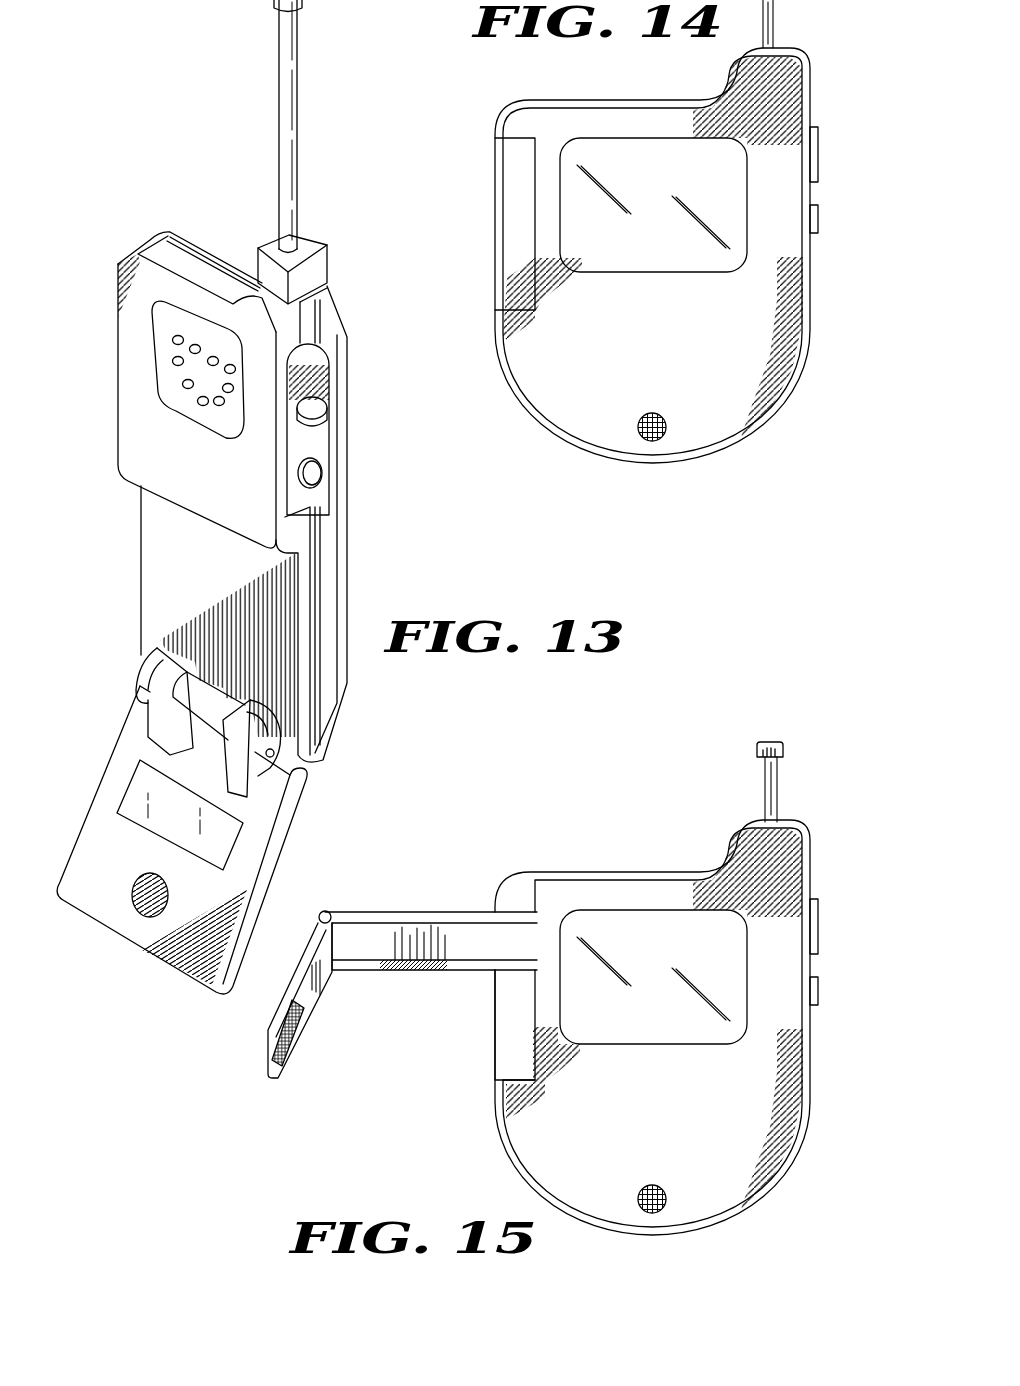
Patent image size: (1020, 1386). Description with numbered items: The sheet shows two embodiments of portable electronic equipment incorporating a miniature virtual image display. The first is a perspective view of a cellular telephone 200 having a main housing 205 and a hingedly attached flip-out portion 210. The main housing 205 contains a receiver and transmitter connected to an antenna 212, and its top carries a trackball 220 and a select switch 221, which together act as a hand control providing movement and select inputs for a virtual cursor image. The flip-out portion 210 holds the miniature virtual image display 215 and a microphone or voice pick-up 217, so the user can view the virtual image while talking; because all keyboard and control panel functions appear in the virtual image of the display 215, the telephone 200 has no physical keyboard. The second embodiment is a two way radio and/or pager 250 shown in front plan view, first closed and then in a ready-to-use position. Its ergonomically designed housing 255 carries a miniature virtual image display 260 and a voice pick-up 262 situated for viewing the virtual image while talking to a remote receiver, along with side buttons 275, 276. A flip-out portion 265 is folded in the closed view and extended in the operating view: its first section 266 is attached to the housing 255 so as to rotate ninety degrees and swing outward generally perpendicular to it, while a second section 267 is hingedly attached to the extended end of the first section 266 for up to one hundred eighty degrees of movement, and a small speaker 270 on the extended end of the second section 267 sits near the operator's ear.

In FIG. 13, the cellular telephone 200 is at (96, 153).
In FIG. 13, the main housing 205 is at (122, 378).
In FIG. 13, the flip-out portion 210 is at (117, 738).
In FIG. 13, the antenna 212 is at (298, 98).
In FIG. 13, the miniature virtual image display 215 is at (140, 792).
In FIG. 13, the voice pick-up 217 is at (132, 893).
In FIG. 13, the trackball 220 is at (325, 479).
In FIG. 13, the select switch 221 is at (327, 414).
In FIG. 14, the two way radio and/or pager 250 is at (583, 76).
In FIG. 15, the two way radio and/or pager 250 is at (450, 1198).
In FIG. 14, the housing 255 is at (678, 450).
In FIG. 15, the housing 255 is at (652, 1044).
In FIG. 14, the miniature virtual image display 260 is at (622, 272).
In FIG. 15, the miniature virtual image display 260 is at (653, 997).
In FIG. 14, the voice pick-up 262 is at (665, 422).
In FIG. 15, the voice pick-up 262 is at (675, 1179).
In FIG. 14, the flip-out portion 265 is at (512, 198).
In FIG. 15, the flip-out portion 265 is at (420, 1022).
In FIG. 15, the first section 266 is at (433, 972).
In FIG. 15, the second section 267 is at (324, 990).
In FIG. 15, the speaker 270 is at (292, 1032).
In FIG. 14, the button 275 is at (818, 152).
In FIG. 15, the button 275 is at (839, 913).
In FIG. 14, the button 276 is at (818, 228).
In FIG. 15, the button 276 is at (841, 1012).